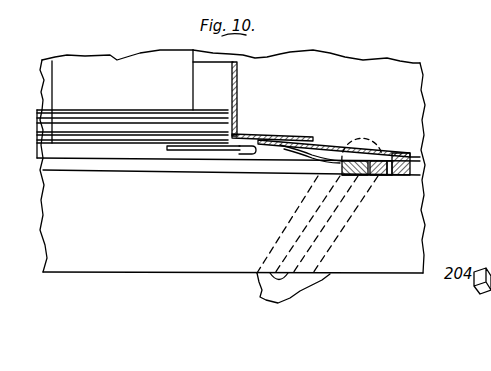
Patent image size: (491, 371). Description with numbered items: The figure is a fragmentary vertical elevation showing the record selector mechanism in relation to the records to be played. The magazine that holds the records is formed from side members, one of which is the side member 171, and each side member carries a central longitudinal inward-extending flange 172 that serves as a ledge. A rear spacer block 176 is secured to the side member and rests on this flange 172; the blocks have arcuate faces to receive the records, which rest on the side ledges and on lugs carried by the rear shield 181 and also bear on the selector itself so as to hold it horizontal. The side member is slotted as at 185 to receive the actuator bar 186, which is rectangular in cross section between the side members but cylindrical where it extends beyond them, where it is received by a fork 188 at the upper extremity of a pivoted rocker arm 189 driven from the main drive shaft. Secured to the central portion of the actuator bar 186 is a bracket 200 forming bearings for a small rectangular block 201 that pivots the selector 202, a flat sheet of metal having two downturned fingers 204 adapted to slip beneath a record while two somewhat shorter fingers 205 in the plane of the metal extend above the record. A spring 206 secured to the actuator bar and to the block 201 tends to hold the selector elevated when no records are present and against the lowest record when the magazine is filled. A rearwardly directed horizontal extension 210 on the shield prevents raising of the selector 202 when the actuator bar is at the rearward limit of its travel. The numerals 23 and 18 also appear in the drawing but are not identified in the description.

The rear spacer block 176 is at (136, 156).
The side member 171 is at (372, 72).
The stack of sheets 23 is at (95, 124).
The lower sheet of stack 18 is at (188, 150).
The inward-extending flange 172 is at (103, 152).
The slot 185 is at (135, 169).
The rear shield 181 is at (239, 93).
The horizontal extension 210 is at (338, 126).
The selector 202 is at (334, 137).
The shorter finger 205 is at (232, 148).
The downturned finger 204 is at (247, 155).
The spring 206 is at (328, 145).
The bracket 200 is at (378, 176).
The rectangular block 201 is at (413, 165).
The actuator bar 186 is at (355, 175).
The fork 188 is at (283, 241).
The rocker arm 189 is at (258, 296).